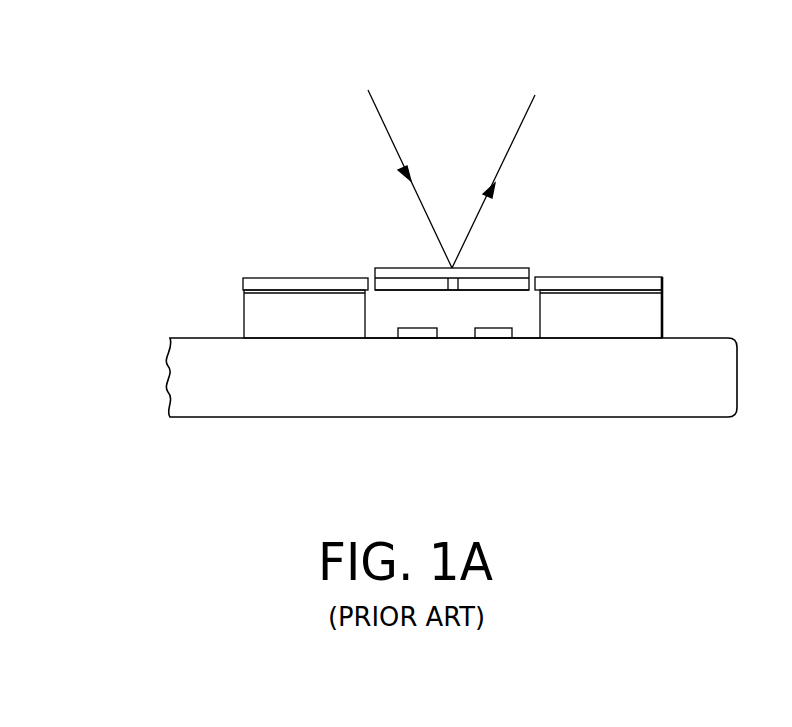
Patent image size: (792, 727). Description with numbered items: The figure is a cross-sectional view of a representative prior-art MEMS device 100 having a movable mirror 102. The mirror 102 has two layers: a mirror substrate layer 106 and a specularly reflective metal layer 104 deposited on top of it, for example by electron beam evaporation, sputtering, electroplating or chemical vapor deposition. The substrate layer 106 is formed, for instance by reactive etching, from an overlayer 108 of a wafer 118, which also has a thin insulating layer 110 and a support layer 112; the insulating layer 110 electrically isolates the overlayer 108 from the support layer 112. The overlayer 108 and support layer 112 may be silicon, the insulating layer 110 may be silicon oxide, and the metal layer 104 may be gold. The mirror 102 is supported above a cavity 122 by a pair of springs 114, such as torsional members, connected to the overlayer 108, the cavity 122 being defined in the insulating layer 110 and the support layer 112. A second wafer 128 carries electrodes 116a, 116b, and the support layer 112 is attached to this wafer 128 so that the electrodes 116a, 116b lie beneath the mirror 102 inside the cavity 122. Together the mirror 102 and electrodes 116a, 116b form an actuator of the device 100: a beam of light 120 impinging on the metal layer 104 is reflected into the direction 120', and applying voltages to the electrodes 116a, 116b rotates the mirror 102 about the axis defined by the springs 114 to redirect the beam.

The MEMS device 100 is at (260, 487).
The movable mirror 102 is at (487, 273).
The specularly reflective metal layer 104 is at (398, 272).
The mirror substrate layer 106 is at (418, 282).
The overlayer 108 is at (272, 278).
The insulating layer 110 is at (662, 290).
The support layer 112 is at (653, 315).
The springs 114 is at (452, 286).
The electrode 116a is at (423, 336).
The electrode 116b is at (490, 335).
The wafer 118 is at (162, 258).
The beam of light 120 is at (397, 163).
The redirected direction of light beam 120' is at (509, 163).
The cavity 122 is at (508, 307).
The second wafer 128 is at (632, 402).